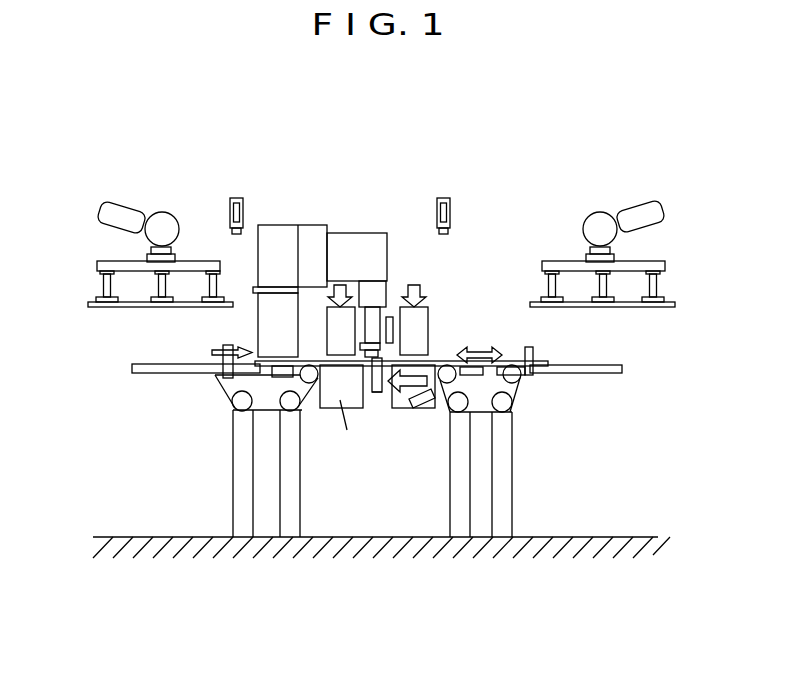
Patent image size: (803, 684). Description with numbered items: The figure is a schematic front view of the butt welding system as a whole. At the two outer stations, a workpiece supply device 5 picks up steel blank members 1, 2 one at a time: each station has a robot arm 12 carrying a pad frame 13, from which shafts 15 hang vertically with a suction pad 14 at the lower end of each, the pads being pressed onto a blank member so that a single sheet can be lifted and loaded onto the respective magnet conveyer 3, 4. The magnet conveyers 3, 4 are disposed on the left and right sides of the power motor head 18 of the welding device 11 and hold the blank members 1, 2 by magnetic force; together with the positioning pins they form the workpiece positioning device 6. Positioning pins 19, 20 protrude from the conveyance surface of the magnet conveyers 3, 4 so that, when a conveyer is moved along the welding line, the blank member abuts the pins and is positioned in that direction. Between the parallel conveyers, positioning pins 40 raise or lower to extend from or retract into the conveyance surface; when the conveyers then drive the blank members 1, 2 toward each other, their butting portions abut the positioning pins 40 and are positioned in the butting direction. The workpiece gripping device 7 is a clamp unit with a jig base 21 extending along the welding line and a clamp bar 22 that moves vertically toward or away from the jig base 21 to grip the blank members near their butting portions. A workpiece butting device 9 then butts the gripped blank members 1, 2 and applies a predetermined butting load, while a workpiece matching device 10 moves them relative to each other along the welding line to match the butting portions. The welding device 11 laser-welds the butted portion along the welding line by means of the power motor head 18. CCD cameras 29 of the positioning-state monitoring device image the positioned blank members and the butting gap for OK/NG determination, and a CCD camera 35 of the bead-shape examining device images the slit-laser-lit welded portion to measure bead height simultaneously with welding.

The blank member 1 is at (303, 302).
The blank member 2 is at (507, 360).
The magnet conveyer 3 is at (215, 376).
The magnet conveyer 4 is at (522, 380).
The workpiece supply device 5 is at (129, 200).
The workpiece positioning device 6 is at (383, 396).
The workpiece gripping device 7 is at (332, 409).
The workpiece butting device 9 is at (437, 361).
The workpiece matching device 10 is at (424, 410).
The welding device 11 is at (341, 233).
The robot arm 12 is at (101, 199).
The pad frame 13 is at (125, 268).
The suction pad 14 is at (92, 299).
The shaft 15 is at (105, 286).
The power motor head 18 is at (378, 297).
The positioning pin 19 is at (226, 343).
The positioning pin 20 is at (536, 353).
The jig base 21 is at (340, 400).
The clamp bar 22 is at (328, 318).
The CCD camera 29 is at (236, 197).
The CCD camera 35 is at (391, 322).
The positioning pin 40 is at (377, 393).